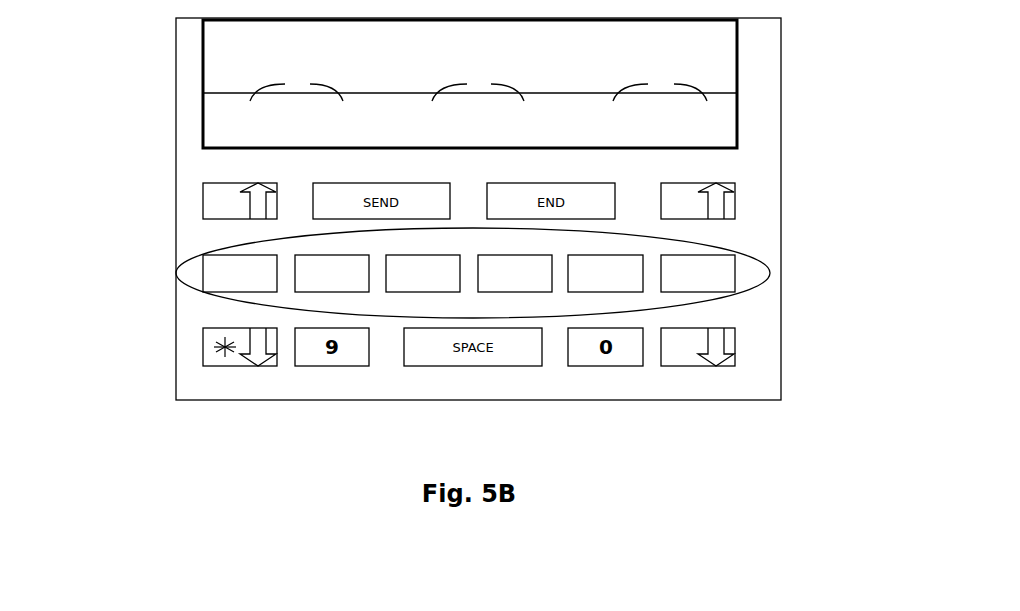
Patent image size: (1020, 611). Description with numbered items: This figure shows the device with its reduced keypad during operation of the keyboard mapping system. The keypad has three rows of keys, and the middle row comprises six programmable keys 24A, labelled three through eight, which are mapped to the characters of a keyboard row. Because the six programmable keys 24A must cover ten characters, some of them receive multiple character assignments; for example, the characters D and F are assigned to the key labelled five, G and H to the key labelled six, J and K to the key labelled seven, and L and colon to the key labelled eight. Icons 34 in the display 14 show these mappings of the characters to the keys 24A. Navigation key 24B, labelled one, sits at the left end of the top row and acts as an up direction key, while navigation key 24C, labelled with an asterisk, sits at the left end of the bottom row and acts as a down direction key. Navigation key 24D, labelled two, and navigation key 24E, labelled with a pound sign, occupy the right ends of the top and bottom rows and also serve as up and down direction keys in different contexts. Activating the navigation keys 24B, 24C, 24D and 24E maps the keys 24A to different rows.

The display 14 is at (737, 57).
The icons 34 is at (478, 88).
The programmable keys 24A is at (770, 272).
The navigation key 24B is at (203, 202).
The navigation key 24C is at (203, 347).
The navigation key 24D is at (735, 203).
The navigation key 24E is at (735, 348).